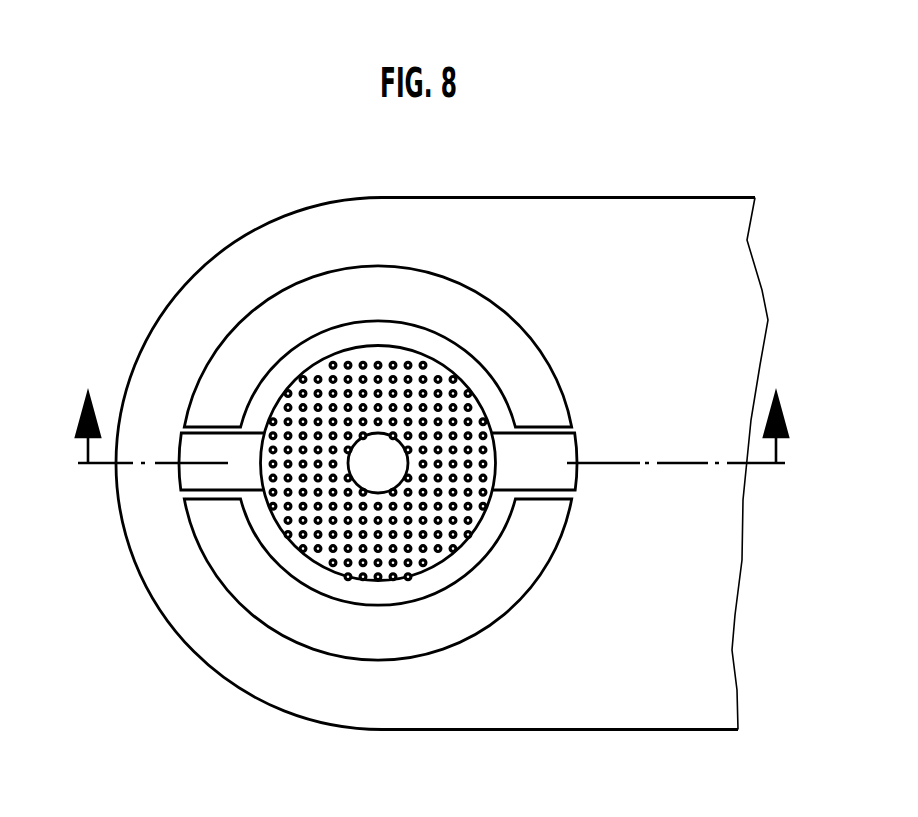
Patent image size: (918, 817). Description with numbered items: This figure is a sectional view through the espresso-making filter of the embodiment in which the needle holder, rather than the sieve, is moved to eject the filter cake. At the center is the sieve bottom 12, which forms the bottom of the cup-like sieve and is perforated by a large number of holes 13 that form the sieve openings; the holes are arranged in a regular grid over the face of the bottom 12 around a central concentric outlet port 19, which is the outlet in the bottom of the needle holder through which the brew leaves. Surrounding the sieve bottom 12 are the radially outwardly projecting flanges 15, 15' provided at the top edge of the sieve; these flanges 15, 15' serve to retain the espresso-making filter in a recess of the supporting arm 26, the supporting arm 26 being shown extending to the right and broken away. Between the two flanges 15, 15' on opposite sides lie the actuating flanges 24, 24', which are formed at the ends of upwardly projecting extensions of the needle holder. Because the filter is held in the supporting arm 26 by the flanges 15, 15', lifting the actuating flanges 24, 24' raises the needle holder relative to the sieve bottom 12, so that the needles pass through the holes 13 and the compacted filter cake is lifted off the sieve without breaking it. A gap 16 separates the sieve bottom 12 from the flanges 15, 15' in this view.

The sieve bottom 12 is at (317, 547).
The holes 13 is at (378, 577).
The flange 15 is at (377, 645).
The flange 15' is at (377, 286).
The annular gap 16 is at (483, 378).
The outlet port 19 is at (393, 450).
The actuating flange 24 is at (534, 612).
The actuating flange 24' is at (188, 527).
The supporting arm 26 is at (652, 693).